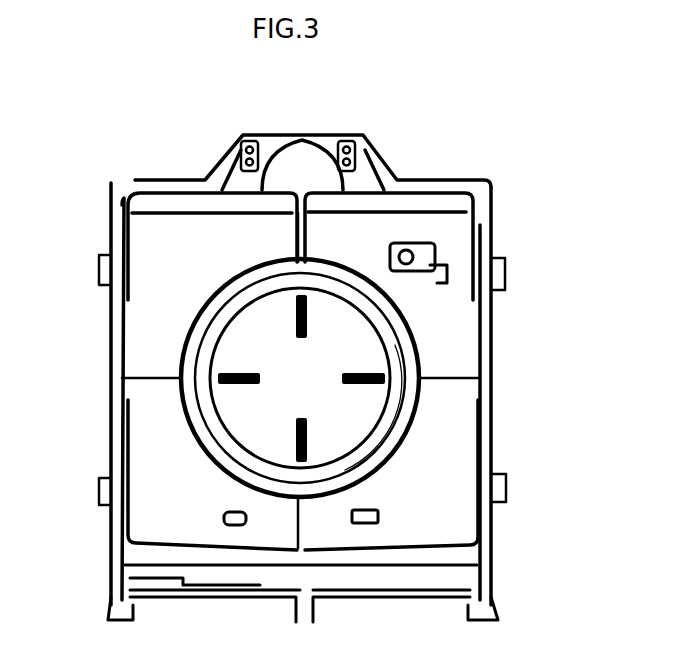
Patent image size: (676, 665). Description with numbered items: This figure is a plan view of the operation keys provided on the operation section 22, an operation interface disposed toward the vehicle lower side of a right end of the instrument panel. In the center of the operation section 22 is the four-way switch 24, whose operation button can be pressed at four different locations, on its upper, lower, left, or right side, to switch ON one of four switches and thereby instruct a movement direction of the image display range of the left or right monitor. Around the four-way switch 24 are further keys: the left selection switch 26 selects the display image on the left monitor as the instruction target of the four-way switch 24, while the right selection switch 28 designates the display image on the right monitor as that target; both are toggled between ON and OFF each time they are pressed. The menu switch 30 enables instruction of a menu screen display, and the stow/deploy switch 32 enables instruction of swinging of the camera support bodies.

The operation section 22 is at (493, 158).
The four-way switch 24 is at (347, 420).
The left selection switch 26 is at (143, 430).
The right selection switch 28 is at (460, 502).
The menu switch 30 is at (153, 315).
The stow/deploy switch 32 is at (443, 322).